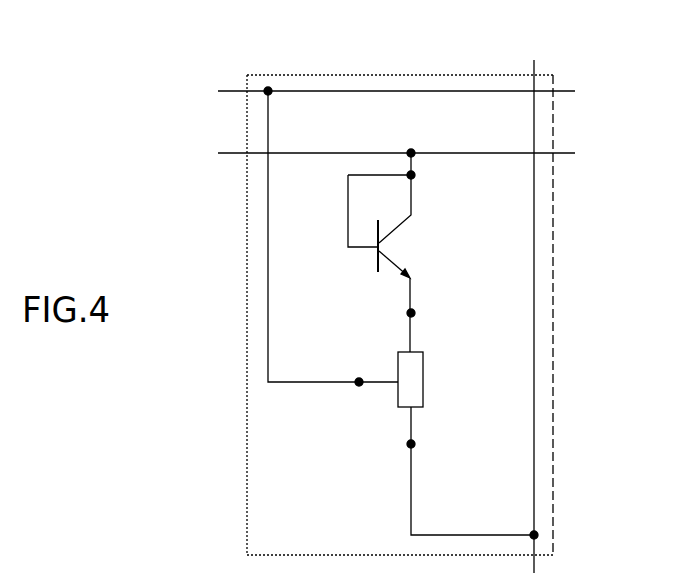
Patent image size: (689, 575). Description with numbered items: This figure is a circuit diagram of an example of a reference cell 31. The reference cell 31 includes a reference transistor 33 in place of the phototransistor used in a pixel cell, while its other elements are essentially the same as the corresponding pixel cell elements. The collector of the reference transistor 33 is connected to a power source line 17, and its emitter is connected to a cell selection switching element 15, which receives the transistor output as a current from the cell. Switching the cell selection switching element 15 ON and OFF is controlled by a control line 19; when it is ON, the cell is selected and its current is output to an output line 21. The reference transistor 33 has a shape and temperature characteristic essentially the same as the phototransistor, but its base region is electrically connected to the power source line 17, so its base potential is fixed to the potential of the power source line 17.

The cell selection switching element 15 is at (424, 368).
The power source line 17 is at (354, 153).
The control line 19 is at (303, 91).
The output line 21 is at (534, 345).
The reference cell 31 is at (450, 75).
The reference transistor 33 is at (406, 245).